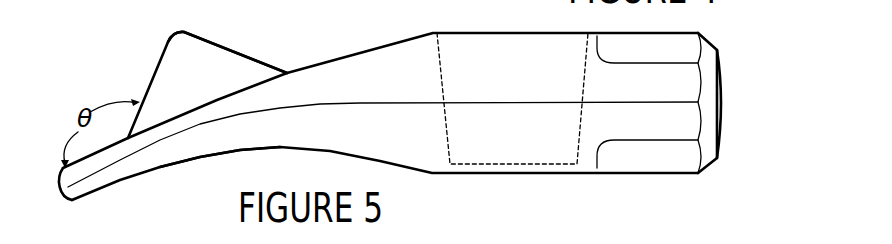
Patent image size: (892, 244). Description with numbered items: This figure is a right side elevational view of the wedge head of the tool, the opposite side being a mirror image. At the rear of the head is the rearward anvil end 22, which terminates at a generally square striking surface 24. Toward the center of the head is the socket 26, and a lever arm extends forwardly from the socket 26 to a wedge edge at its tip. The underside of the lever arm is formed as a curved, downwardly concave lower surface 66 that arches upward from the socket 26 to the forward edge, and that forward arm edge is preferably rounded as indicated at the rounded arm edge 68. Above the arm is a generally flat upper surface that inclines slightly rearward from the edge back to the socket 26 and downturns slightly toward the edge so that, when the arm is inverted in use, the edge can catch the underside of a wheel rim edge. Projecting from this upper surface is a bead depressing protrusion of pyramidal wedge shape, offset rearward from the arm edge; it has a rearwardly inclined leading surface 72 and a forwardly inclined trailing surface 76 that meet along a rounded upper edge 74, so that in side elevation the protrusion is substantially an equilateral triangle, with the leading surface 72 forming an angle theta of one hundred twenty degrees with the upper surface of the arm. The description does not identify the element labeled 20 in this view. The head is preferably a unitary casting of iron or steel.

The handle body 20 is at (495, 82).
The rearward anvil end 22 is at (699, 33).
The striking surface 24 is at (724, 105).
The socket 26 is at (512, 138).
The lower surface 66 is at (238, 150).
The rounded arm edge 68 is at (62, 185).
The leading surface 72 is at (150, 84).
The upper edge 74 is at (183, 32).
The trailing surface 76 is at (240, 53).